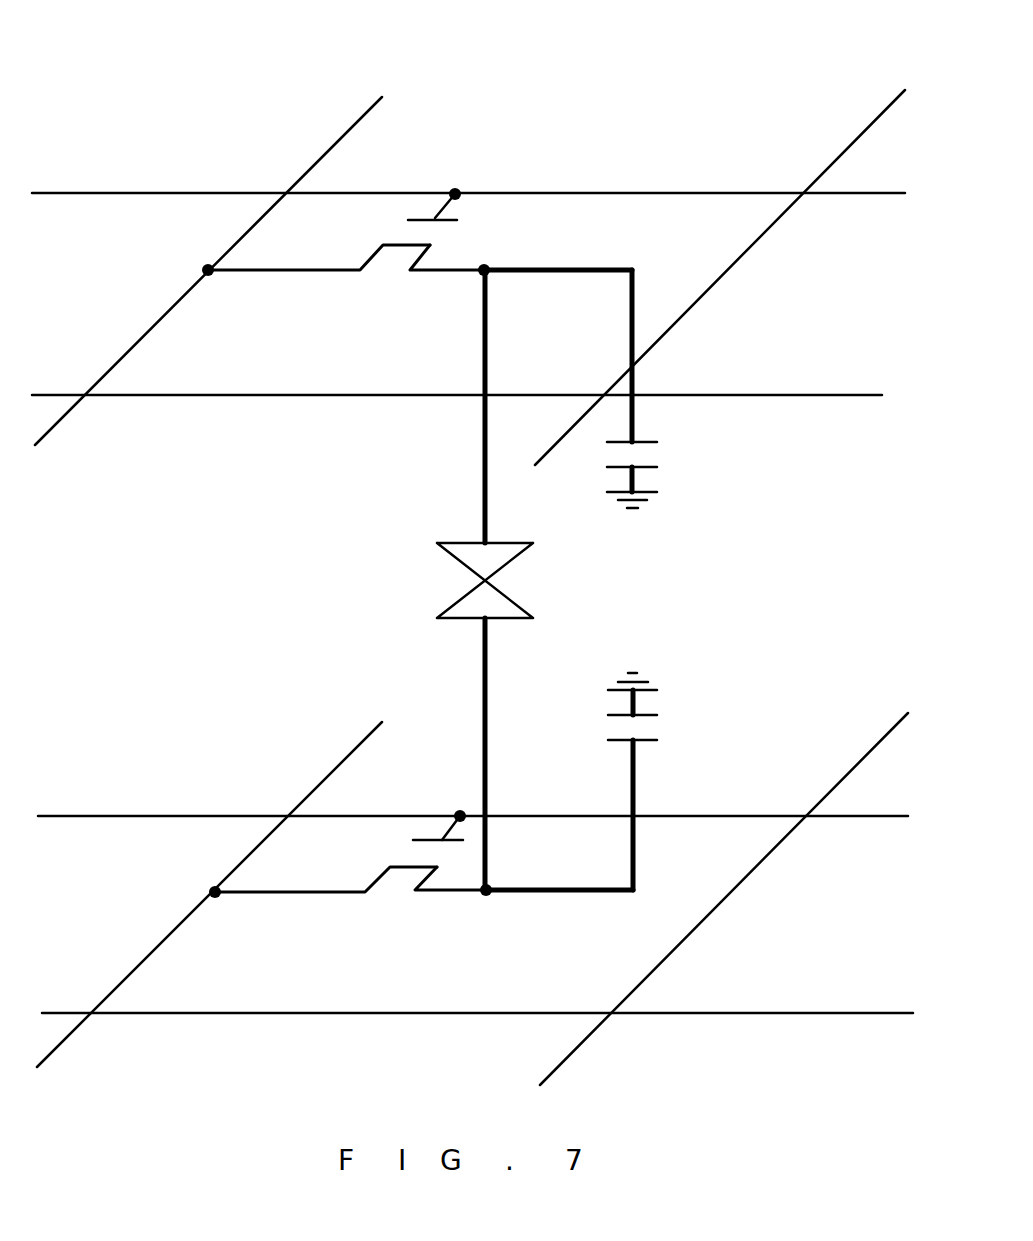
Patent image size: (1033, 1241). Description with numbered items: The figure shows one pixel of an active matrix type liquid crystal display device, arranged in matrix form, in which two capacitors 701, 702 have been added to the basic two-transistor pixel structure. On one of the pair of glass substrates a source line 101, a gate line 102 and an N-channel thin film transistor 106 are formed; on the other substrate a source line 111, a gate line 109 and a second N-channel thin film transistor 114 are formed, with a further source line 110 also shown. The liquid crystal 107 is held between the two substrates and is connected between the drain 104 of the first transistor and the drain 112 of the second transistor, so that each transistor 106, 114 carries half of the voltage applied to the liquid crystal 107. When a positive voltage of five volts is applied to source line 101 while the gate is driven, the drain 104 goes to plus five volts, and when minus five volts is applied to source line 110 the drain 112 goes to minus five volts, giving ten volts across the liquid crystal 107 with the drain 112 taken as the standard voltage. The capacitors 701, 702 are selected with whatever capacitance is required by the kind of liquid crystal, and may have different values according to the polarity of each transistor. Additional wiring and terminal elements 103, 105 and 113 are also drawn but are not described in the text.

The source line 101 is at (308, 167).
The gate line 102 is at (530, 193).
The first connection wire 103 is at (307, 272).
The drain 104 is at (457, 272).
The first switching transistor 105 is at (448, 207).
The thin film transistor 106 is at (422, 230).
The liquid crystal 107 is at (485, 592).
The gate line 109 is at (263, 813).
The source line 110 is at (92, 1013).
The source line 111 is at (313, 892).
The drain 112 is at (460, 892).
The second switching transistor 113 is at (448, 822).
The thin film transistor 114 is at (435, 850).
The capacitor 701 is at (630, 453).
The capacitor 702 is at (635, 722).